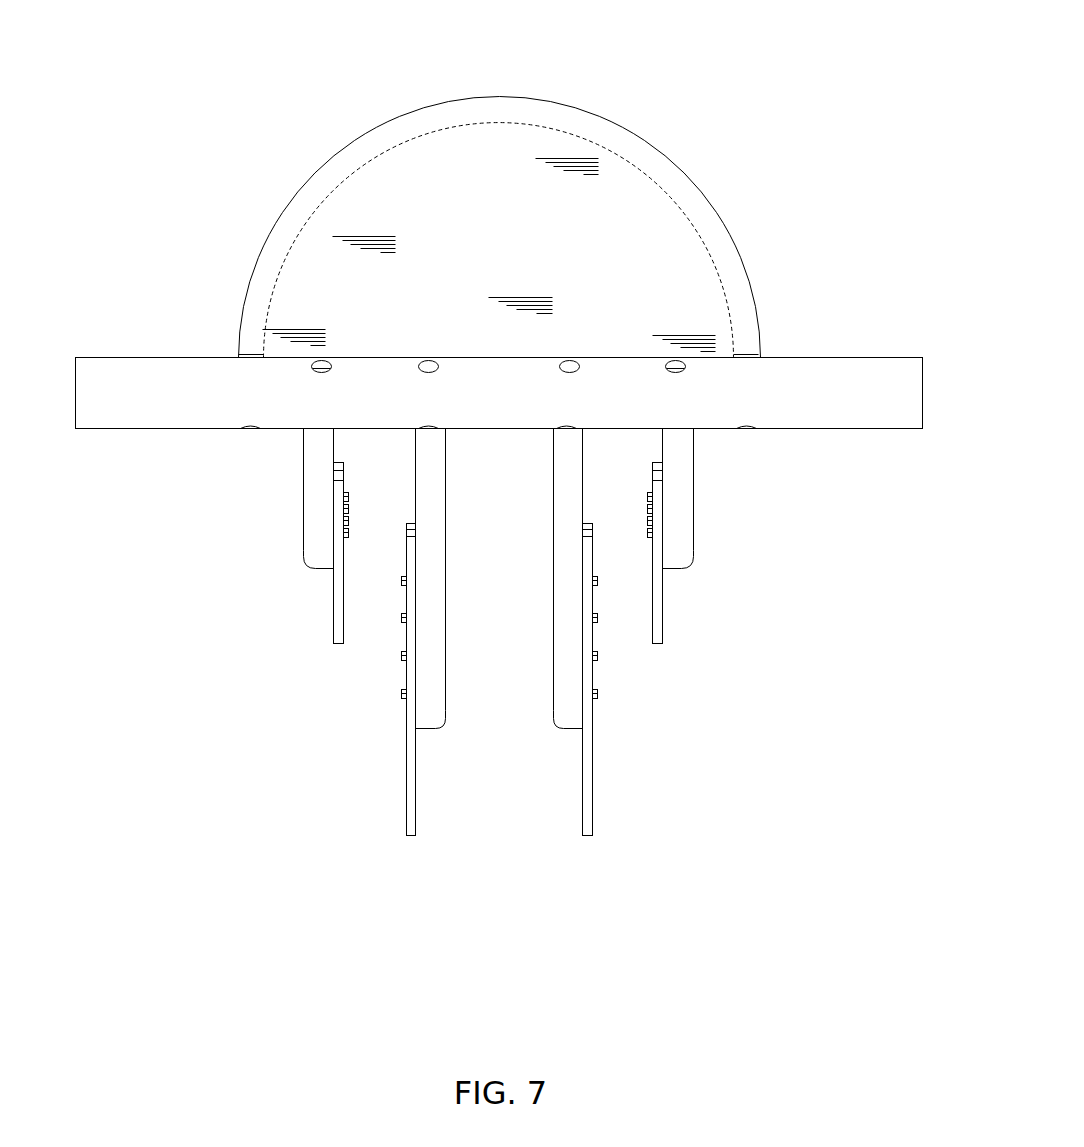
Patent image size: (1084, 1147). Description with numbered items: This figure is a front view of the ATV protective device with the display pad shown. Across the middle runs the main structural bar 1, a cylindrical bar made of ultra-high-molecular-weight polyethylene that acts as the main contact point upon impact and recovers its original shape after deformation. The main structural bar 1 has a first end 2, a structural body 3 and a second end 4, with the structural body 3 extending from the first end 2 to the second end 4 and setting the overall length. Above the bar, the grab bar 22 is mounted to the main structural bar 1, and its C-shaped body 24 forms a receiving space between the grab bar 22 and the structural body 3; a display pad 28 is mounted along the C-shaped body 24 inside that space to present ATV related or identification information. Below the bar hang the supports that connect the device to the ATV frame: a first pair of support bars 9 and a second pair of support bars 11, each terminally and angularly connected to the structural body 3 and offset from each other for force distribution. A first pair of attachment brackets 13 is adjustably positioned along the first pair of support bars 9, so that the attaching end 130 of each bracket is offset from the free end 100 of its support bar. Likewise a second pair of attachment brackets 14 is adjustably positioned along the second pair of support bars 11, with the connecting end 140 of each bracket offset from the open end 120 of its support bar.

The main structural bar 1 is at (196, 332).
The first end 2 is at (76, 412).
The structural body 3 is at (187, 418).
The second end 4 is at (922, 407).
The first pair of support bars 9 is at (317, 476).
The second pair of support bars 11 is at (553, 497).
The first pair of attachment brackets 13 is at (338, 618).
The second pair of attachment brackets 14 is at (410, 752).
The grab bar 22 is at (778, 238).
The C-shaped body 24 is at (561, 112).
The display pad 28 is at (468, 253).
The free end 100 is at (333, 565).
The open end 120 is at (425, 728).
The attaching end 130 is at (338, 644).
The connecting end 140 is at (410, 838).